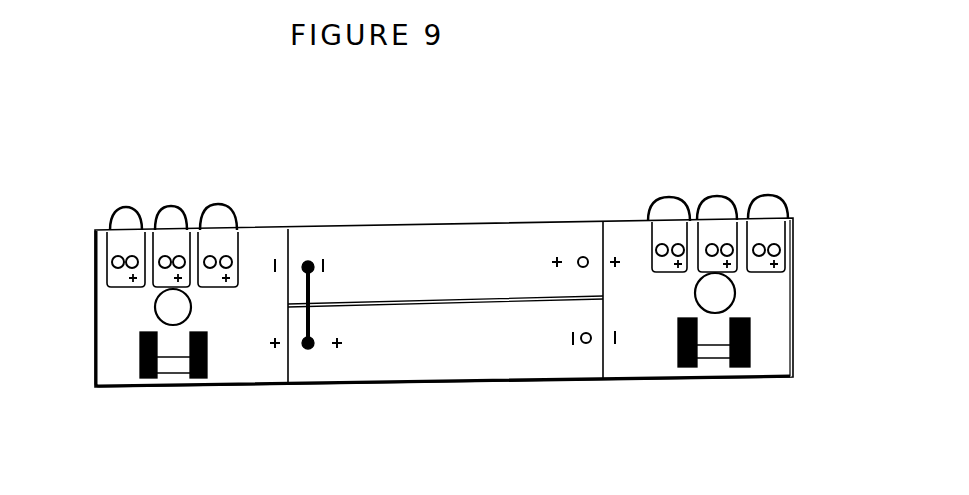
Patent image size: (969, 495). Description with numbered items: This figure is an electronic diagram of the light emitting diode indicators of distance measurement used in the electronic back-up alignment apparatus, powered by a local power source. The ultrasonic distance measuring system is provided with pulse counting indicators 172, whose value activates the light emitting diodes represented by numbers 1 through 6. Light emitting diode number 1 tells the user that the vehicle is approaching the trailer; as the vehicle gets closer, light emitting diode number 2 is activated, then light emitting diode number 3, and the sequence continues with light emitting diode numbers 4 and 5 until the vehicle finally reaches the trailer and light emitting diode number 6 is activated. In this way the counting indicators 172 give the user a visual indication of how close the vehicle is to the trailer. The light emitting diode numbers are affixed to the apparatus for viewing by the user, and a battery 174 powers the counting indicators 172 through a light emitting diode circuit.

The light emitting diode number 1 is at (123, 200).
The light emitting diode number 2 is at (172, 200).
The light emitting diode number 3 is at (227, 200).
The light emitting diode number 4 is at (668, 187).
The light emitting diode number 5 is at (718, 190).
The light emitting diode number 6 is at (768, 190).
The pulse counting indicators 172 is at (260, 213).
The battery 174 is at (430, 352).